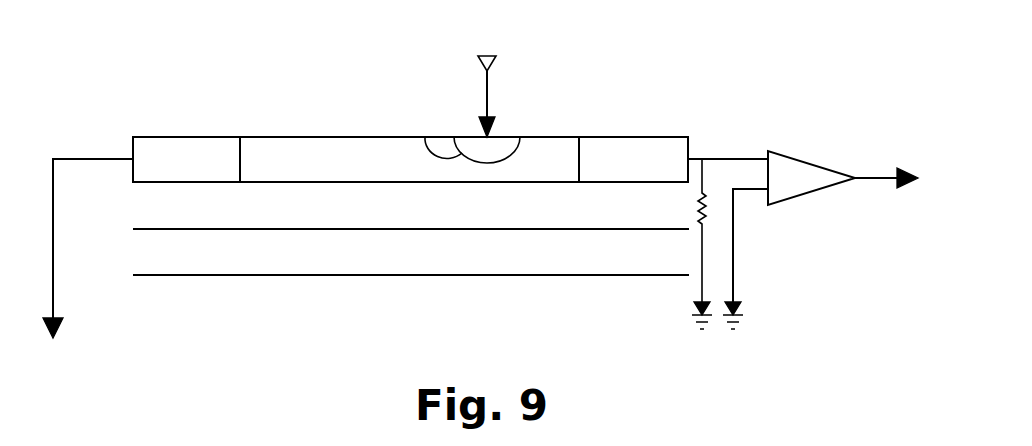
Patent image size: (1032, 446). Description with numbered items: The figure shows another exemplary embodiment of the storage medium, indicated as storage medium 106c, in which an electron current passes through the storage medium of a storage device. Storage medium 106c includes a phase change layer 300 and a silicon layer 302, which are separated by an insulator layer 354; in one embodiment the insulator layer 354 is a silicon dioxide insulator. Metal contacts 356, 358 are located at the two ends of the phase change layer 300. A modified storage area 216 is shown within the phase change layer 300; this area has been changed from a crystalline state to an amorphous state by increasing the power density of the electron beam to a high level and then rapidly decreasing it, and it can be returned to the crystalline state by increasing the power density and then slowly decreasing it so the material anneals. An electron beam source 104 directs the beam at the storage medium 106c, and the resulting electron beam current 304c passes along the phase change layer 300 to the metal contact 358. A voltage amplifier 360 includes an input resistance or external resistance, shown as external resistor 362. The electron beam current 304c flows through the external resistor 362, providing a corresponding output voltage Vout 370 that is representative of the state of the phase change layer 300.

The storage medium 106c is at (121, 78).
The metal contact 356 is at (185, 137).
The metal contact 358 is at (637, 137).
The phase change layer 300 is at (409, 157).
The insulator layer 354 is at (411, 212).
The silicon layer 302 is at (411, 258).
The modified storage area 216 is at (426, 137).
The electron beam current 304c is at (488, 112).
The light source 104 is at (498, 64).
The external resistor 362 is at (698, 212).
The voltage amplifier 360 is at (829, 140).
The output voltage Vout 370 is at (875, 225).